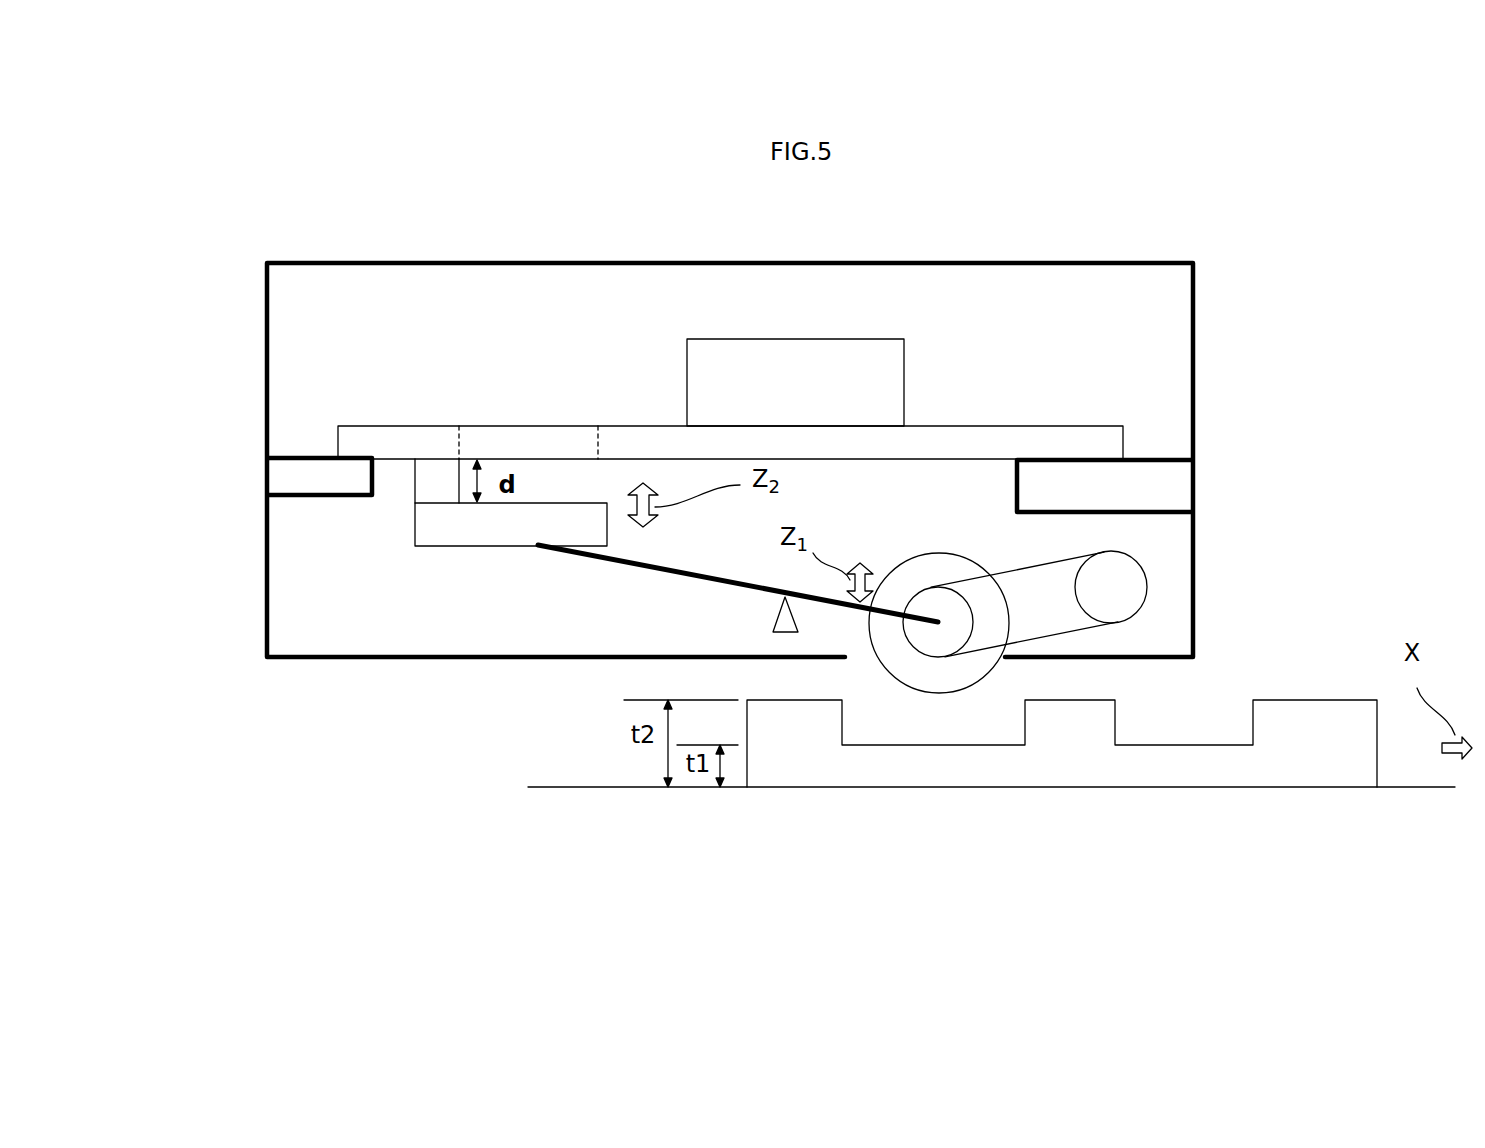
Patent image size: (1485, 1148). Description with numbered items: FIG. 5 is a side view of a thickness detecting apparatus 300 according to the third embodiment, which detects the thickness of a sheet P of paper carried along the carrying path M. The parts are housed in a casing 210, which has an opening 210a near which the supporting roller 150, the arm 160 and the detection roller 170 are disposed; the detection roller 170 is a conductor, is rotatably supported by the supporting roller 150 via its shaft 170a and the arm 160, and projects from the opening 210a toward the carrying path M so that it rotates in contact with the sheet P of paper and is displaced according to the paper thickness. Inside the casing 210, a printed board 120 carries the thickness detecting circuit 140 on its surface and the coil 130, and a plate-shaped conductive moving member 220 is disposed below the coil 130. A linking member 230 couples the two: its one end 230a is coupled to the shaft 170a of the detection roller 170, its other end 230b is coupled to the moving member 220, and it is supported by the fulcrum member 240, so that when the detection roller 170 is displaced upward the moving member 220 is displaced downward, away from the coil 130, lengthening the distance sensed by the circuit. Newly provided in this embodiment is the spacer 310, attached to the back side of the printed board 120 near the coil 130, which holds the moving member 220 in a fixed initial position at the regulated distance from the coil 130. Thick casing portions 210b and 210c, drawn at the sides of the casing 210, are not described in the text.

The thickness detecting apparatus 300 is at (1135, 222).
The casing 210 is at (555, 260).
The opening of the casing 210a is at (857, 648).
The left guide portion of housing 210b is at (285, 478).
The right guide portion of housing 210c is at (1185, 478).
The printed board 120 is at (668, 435).
The coil 130 is at (487, 430).
The thickness detecting circuit 140 is at (904, 392).
The spacer 310 is at (435, 478).
The moving member 220 is at (425, 520).
The linking member 230 is at (630, 567).
The one end of the linking member 230a is at (935, 627).
The other end of the linking member 230b is at (538, 547).
The fulcrum member 240 is at (777, 622).
The detection roller 170 is at (917, 563).
The shaft 170a is at (937, 612).
The supporting roller 150 is at (1133, 595).
The arm 160 is at (1060, 622).
The carrying path M is at (593, 785).
The sheet of paper P is at (1277, 708).